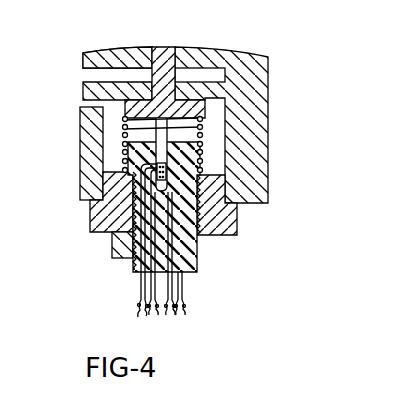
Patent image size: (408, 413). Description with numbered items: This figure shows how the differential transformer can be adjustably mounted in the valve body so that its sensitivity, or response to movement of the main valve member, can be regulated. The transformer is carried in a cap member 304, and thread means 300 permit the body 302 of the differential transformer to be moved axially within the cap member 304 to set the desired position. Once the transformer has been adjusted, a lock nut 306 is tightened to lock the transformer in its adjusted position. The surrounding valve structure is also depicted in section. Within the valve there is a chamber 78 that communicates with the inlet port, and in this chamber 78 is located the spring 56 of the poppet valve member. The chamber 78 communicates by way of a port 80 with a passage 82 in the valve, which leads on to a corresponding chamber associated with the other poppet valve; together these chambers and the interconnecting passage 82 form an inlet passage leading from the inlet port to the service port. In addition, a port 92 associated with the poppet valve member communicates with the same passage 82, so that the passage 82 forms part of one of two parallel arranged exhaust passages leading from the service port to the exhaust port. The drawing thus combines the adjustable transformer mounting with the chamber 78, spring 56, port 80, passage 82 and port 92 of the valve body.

The spring 56 is at (205, 134).
The chamber 78 is at (212, 153).
The port 80 is at (182, 92).
The passage 82 is at (97, 74).
The port 92 is at (179, 58).
The thread means 300 is at (200, 206).
The body of the differential transformer 302 is at (196, 268).
The cap member 304 is at (98, 207).
The lock nut 306 is at (112, 244).